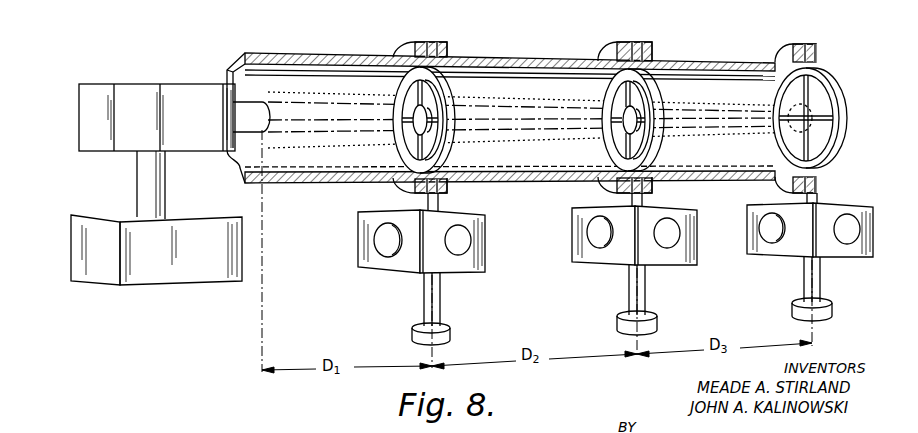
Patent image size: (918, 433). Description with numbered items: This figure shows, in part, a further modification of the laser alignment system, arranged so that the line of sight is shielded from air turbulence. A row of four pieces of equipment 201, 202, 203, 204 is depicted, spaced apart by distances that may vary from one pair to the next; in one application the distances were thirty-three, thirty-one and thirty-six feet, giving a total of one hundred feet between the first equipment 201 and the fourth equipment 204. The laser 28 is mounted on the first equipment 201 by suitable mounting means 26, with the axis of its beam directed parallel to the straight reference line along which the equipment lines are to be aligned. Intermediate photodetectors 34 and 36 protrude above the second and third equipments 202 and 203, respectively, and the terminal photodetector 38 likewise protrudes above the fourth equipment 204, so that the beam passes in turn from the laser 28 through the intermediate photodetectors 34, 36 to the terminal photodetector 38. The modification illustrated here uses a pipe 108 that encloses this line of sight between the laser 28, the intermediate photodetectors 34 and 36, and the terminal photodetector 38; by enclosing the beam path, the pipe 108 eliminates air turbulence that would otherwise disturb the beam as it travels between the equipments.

The laser 28 is at (140, 84).
The mounting means 26 is at (140, 193).
The equipment 201 is at (173, 284).
The equipment 202 is at (462, 275).
The equipment 203 is at (670, 265).
The equipment 204 is at (845, 258).
The pipe 108 is at (323, 55).
The intermediate photodetector 34 is at (440, 70).
The intermediate photodetector 36 is at (642, 72).
The terminal photodetector 38 is at (828, 77).